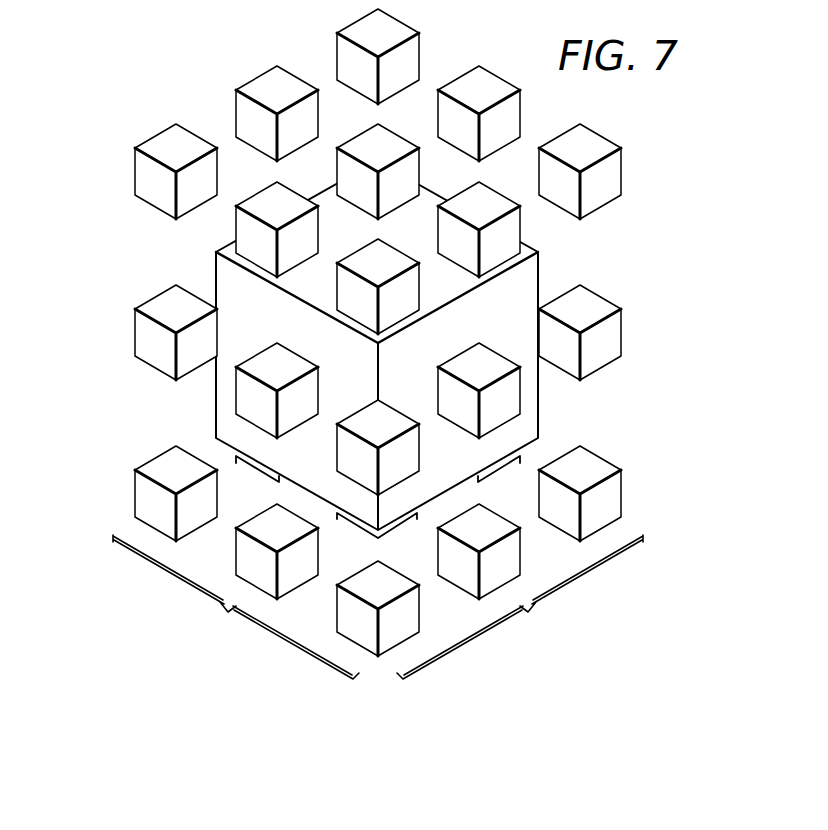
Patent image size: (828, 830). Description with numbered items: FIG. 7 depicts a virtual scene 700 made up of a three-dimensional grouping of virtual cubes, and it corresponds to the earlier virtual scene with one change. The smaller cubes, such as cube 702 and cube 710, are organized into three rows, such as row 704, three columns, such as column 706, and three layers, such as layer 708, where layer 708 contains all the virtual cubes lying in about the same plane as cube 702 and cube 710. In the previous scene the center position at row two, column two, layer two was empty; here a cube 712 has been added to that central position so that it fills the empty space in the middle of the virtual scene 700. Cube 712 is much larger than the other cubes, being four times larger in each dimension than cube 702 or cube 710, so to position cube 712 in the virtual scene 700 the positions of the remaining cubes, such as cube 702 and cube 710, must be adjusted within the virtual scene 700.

The virtual scene 700 is at (672, 229).
The cube 702 is at (613, 497).
The row 704 is at (520, 607).
The column 706 is at (236, 607).
The layer 708 is at (125, 480).
The cube 710 is at (140, 498).
The cube 712 is at (536, 272).